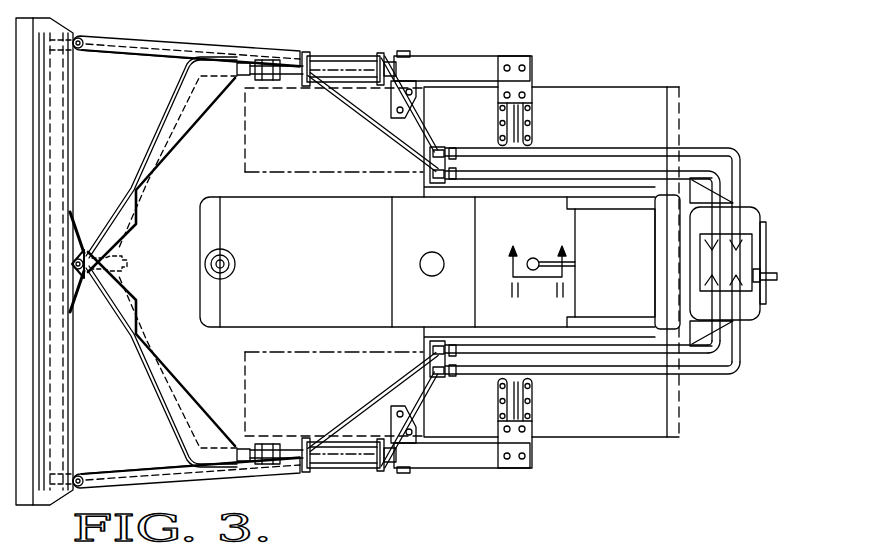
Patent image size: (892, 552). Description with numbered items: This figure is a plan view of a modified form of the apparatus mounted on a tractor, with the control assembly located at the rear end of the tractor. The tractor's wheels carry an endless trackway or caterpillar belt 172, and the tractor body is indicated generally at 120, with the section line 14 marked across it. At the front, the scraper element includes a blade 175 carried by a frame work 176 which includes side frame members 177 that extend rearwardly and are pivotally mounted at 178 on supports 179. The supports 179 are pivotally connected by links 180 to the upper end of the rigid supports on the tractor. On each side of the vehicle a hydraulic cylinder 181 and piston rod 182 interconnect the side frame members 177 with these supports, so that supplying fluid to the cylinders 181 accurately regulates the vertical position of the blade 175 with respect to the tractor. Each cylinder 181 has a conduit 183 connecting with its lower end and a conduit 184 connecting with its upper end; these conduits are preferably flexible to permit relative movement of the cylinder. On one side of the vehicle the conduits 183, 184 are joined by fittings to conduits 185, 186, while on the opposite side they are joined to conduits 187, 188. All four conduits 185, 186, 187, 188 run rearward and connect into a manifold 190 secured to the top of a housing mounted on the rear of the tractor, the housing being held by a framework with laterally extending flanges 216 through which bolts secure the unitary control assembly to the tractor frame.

The section line 14- 14 is at (537, 261).
The tractor body 120 is at (323, 214).
The endless trackway or caterpillar belt 172 is at (353, 356).
The blade 175 is at (69, 377).
The frame work 176 is at (133, 327).
The side frame members 177 is at (140, 44).
The pivotal mounting 178 is at (517, 469).
The supports 179 is at (535, 86).
The links 180 is at (458, 469).
The hydraulic cylinder 181 is at (346, 60).
The piston rod 182 is at (296, 65).
The conduit 183 is at (335, 95).
The conduit 184 is at (434, 150).
The conduit 185 is at (562, 176).
The conduit 186 is at (628, 134).
The conduit 187 is at (624, 353).
The conduit 188 is at (577, 371).
The manifold 190 is at (733, 262).
The laterally extending flanges 216 is at (707, 362).